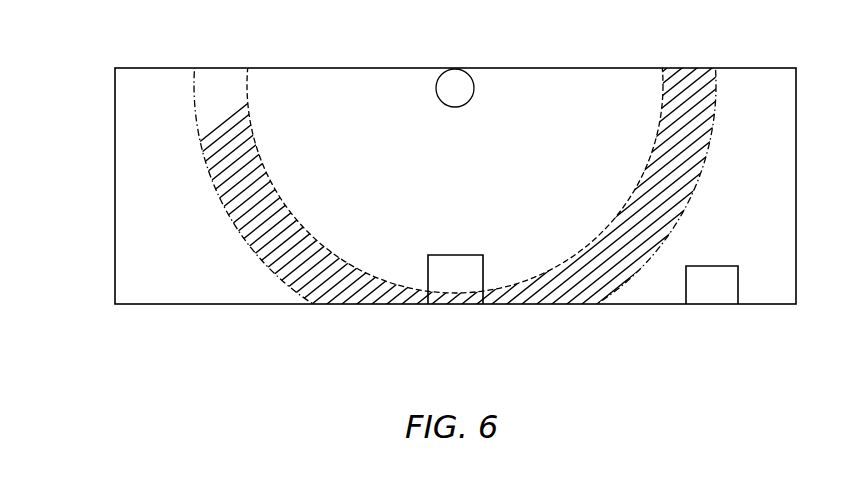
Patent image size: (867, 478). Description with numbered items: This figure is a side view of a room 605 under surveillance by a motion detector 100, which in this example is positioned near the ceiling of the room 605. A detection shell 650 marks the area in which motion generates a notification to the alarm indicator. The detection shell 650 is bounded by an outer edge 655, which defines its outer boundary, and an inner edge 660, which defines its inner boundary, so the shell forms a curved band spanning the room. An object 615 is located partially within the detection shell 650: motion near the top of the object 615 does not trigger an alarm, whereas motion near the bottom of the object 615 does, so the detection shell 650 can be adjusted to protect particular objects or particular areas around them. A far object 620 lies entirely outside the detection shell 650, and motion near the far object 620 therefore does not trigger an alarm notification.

The motion detector 100 is at (462, 69).
The room 605 is at (115, 232).
The object 615 is at (457, 305).
The far object 620 is at (710, 304).
The detection shell 650 is at (360, 237).
The outer edge 655 is at (230, 220).
The inner edge 660 is at (277, 188).